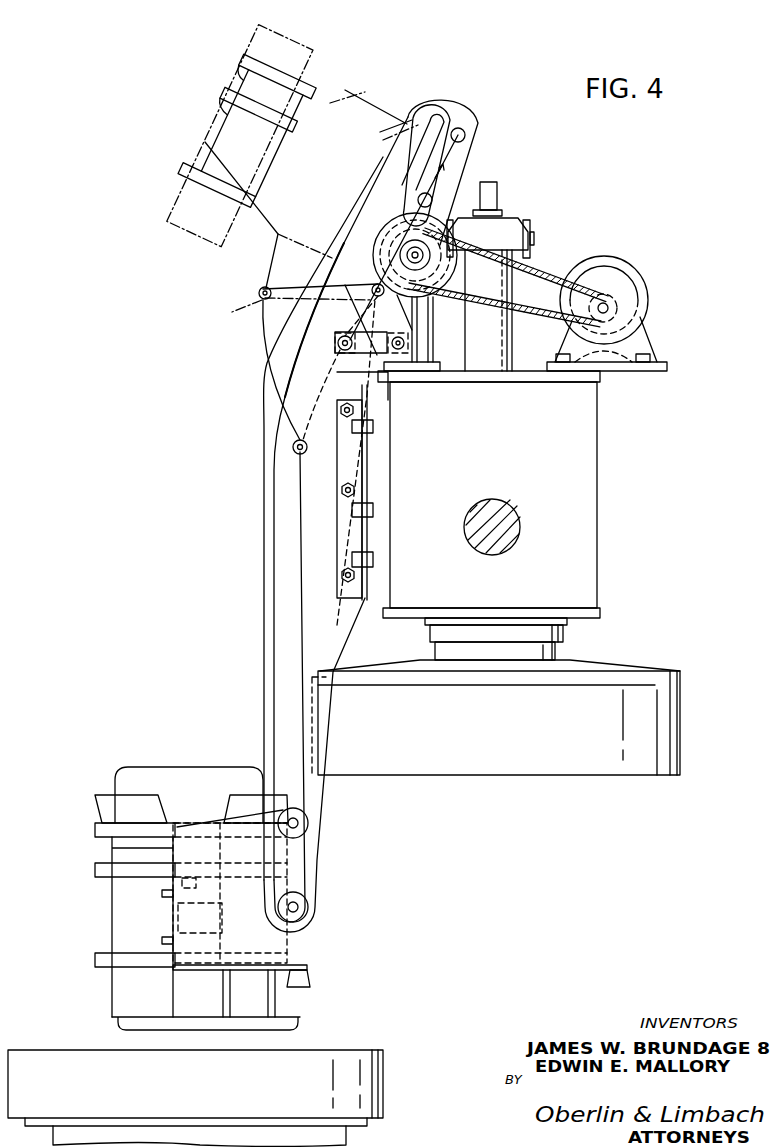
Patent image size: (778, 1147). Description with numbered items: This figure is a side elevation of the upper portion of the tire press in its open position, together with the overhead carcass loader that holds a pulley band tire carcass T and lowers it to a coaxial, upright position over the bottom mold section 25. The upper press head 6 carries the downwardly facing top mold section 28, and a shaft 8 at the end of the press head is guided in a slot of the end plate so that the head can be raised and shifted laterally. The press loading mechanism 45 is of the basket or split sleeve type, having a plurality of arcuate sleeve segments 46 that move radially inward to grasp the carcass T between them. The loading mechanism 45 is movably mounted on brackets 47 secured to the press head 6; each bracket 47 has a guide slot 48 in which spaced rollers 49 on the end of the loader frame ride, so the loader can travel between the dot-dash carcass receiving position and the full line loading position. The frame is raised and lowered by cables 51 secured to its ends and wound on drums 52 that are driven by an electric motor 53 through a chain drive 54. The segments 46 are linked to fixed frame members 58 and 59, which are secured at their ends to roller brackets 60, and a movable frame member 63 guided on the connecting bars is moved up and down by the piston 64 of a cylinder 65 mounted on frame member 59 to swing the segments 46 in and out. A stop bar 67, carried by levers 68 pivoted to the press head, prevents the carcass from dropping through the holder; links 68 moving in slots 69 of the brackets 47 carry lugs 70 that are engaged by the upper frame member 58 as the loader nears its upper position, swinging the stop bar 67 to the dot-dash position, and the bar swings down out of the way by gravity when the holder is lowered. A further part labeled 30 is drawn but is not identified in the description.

The press head 6 is at (603, 451).
The shaft 8 is at (505, 525).
The bottom mold section 25 is at (328, 1053).
The top mold section 28 is at (485, 763).
The motor support 30 is at (482, 371).
The press loading mechanism 45 is at (208, 146).
The arcuate sleeve segments 46 is at (286, 40).
The brackets 47 is at (264, 538).
The guide slot 48 is at (283, 485).
The rollers 49 is at (308, 823).
The cables 51 is at (328, 723).
The drums 52 is at (460, 177).
The electric motor 53 is at (630, 271).
The chain drive 54 is at (548, 272).
The fixed frame member 58 is at (95, 829).
The fixed frame member 59 is at (110, 963).
The roller brackets 60 is at (207, 823).
The movable frame member 63 is at (95, 869).
The piston 64 is at (165, 886).
The cylinder 65 is at (207, 920).
The stop bar 67 is at (258, 296).
The levers 68 is at (333, 330).
The slots 69 is at (427, 182).
The lugs 70 is at (452, 105).
The pulley band tire carcass T is at (185, 768).